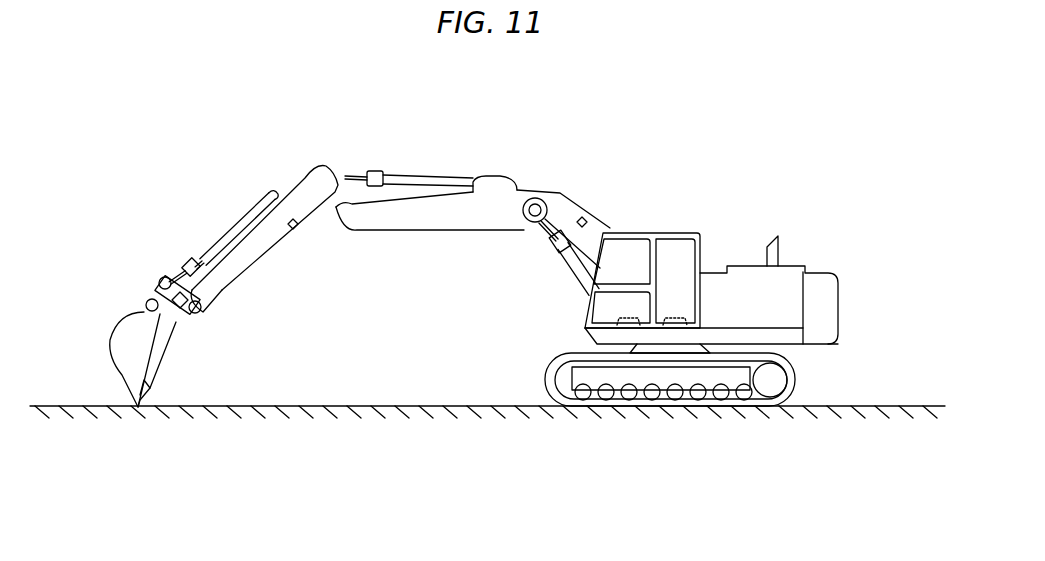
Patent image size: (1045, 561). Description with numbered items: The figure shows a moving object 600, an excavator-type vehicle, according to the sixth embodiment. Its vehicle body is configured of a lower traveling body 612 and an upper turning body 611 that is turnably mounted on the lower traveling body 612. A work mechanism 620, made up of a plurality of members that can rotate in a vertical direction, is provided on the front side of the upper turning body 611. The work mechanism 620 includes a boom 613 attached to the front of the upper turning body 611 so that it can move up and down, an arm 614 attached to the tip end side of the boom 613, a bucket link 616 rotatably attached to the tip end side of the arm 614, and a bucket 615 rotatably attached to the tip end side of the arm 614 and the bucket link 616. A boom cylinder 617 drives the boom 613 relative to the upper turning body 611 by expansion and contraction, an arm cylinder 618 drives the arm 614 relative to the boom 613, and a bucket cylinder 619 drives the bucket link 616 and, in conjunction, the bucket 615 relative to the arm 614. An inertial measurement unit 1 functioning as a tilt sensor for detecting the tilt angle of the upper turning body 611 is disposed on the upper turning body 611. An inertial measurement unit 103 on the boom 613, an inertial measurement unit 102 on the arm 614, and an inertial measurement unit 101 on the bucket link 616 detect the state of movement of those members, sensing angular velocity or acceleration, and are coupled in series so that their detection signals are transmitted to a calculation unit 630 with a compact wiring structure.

The moving object 600 is at (855, 115).
The upper turning body 611 is at (825, 312).
The lower traveling body 612 is at (786, 381).
The work mechanism 620 is at (560, 163).
The boom 613 is at (565, 196).
The arm 614 is at (306, 172).
The bucket 615 is at (122, 330).
The bucket link 616 is at (172, 268).
The boom cylinder 617 is at (553, 260).
The arm cylinder 618 is at (427, 173).
The bucket cylinder 619 is at (222, 237).
The inertial measurement unit 101 is at (190, 322).
The inertial measurement unit 102 is at (294, 232).
The inertial measurement unit 103 is at (585, 220).
The inertial measurement unit 1 is at (635, 322).
The calculation unit 630 is at (682, 322).